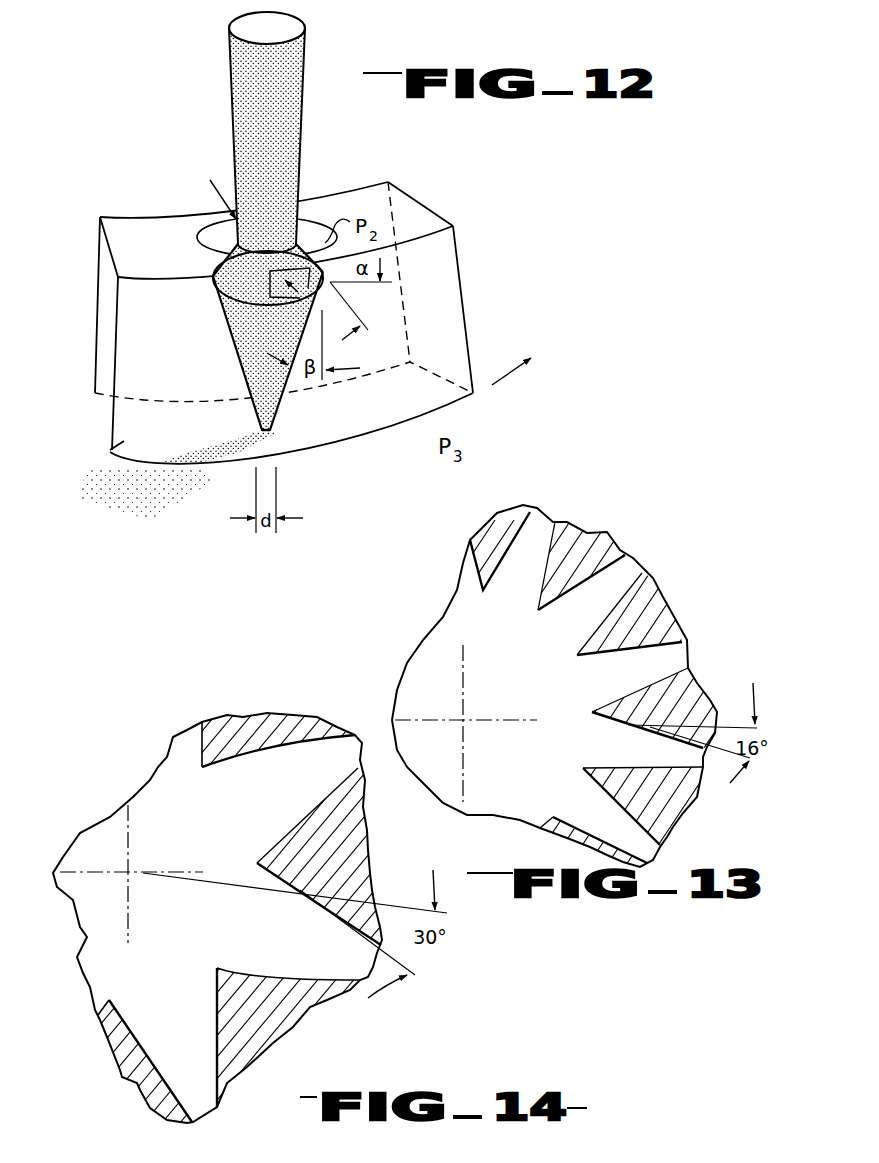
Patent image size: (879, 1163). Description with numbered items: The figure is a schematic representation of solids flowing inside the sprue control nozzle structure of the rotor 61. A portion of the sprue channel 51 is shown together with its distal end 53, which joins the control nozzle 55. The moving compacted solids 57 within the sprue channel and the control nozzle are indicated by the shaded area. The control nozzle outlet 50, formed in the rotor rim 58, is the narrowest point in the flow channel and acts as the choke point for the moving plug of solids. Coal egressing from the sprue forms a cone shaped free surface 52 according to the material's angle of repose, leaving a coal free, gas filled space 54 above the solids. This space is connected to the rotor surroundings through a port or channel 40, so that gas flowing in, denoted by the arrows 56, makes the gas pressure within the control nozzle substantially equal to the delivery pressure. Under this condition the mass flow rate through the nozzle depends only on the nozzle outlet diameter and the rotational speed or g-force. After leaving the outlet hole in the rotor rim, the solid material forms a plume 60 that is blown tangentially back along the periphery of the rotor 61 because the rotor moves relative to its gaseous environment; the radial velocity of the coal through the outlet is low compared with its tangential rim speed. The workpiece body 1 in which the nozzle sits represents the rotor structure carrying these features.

The workpiece 1 is at (112, 450).
The port or channel 40 is at (222, 232).
The control nozzle outlet 50 is at (276, 431).
The sprue channel 51 is at (232, 94).
The cone shaped free surface 52 is at (318, 236).
The distal end of sprue channel 53 is at (297, 236).
The coal free gas filled space 54 is at (323, 232).
The control nozzle 55 is at (222, 322).
The gas inflow arrows 56 is at (212, 182).
The moving compacted solids 57 is at (288, 63).
The rotor rim 58 is at (100, 415).
The plume 60 is at (162, 483).
The rotor 61 is at (494, 387).